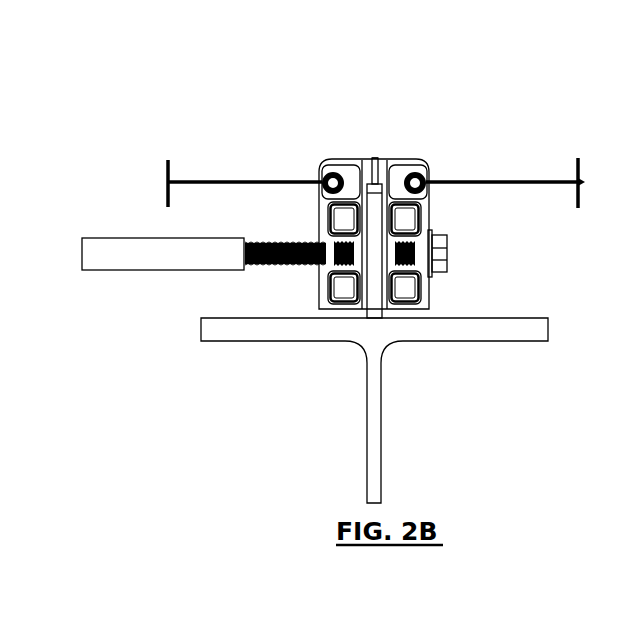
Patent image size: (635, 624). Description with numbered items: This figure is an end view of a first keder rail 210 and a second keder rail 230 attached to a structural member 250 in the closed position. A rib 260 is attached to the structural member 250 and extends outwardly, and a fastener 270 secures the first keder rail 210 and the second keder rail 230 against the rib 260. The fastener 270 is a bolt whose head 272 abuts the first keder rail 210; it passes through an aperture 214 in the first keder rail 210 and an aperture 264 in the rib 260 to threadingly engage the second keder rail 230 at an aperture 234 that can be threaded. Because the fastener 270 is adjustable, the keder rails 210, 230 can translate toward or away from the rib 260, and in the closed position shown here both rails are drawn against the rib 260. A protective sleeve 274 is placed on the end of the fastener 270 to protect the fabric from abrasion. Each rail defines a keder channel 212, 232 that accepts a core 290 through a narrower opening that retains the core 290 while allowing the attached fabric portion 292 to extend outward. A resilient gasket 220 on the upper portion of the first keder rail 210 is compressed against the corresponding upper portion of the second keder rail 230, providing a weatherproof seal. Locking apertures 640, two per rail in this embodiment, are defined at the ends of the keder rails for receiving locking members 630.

The first keder rail 210 is at (340, 238).
The keder channel 212 is at (433, 141).
The aperture 214 is at (464, 246).
The resilient gasket 220 is at (409, 110).
The second keder rail 230 is at (333, 208).
The keder channel 232 is at (319, 130).
The aperture 234 is at (275, 234).
The structural member 250 is at (407, 410).
The rib 260 is at (342, 178).
The aperture 264 is at (300, 343).
The fastener 270 is at (242, 239).
The head 272 is at (480, 253).
The protective sleeve 274 is at (148, 227).
The core 290 is at (381, 137).
The fabric portion 292 is at (370, 166).
The locking member 630 is at (386, 249).
The locking aperture 640 is at (355, 251).